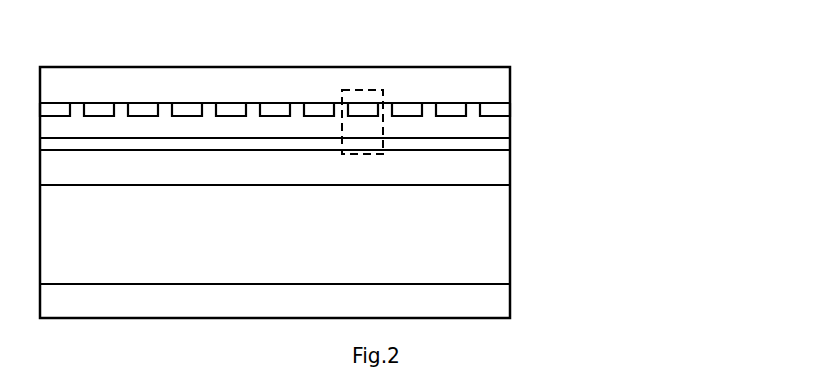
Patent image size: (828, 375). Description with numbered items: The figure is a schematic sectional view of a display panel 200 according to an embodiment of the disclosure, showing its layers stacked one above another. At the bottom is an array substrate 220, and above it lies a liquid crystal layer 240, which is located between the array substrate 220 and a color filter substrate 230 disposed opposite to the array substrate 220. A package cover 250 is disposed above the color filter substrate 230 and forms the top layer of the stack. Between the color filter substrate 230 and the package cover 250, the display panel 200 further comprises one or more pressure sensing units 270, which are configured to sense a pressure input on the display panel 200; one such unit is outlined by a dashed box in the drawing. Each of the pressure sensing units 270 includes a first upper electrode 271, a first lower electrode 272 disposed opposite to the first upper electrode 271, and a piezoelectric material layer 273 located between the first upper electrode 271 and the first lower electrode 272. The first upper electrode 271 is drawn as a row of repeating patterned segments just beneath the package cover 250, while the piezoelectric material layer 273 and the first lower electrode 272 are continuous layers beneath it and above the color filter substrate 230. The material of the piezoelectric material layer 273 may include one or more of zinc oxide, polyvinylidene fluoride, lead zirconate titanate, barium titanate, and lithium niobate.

The display panel 200 is at (69, 29).
The array substrate 220 is at (275, 301).
The color filter substrate 230 is at (275, 167).
The liquid crystal layer 240 is at (275, 234).
The package cover 250 is at (275, 85).
The pressure sensing unit 270 is at (372, 97).
The first upper electrode 271 is at (495, 109).
The first lower electrode 272 is at (495, 142).
The piezoelectric material layer 273 is at (495, 126).